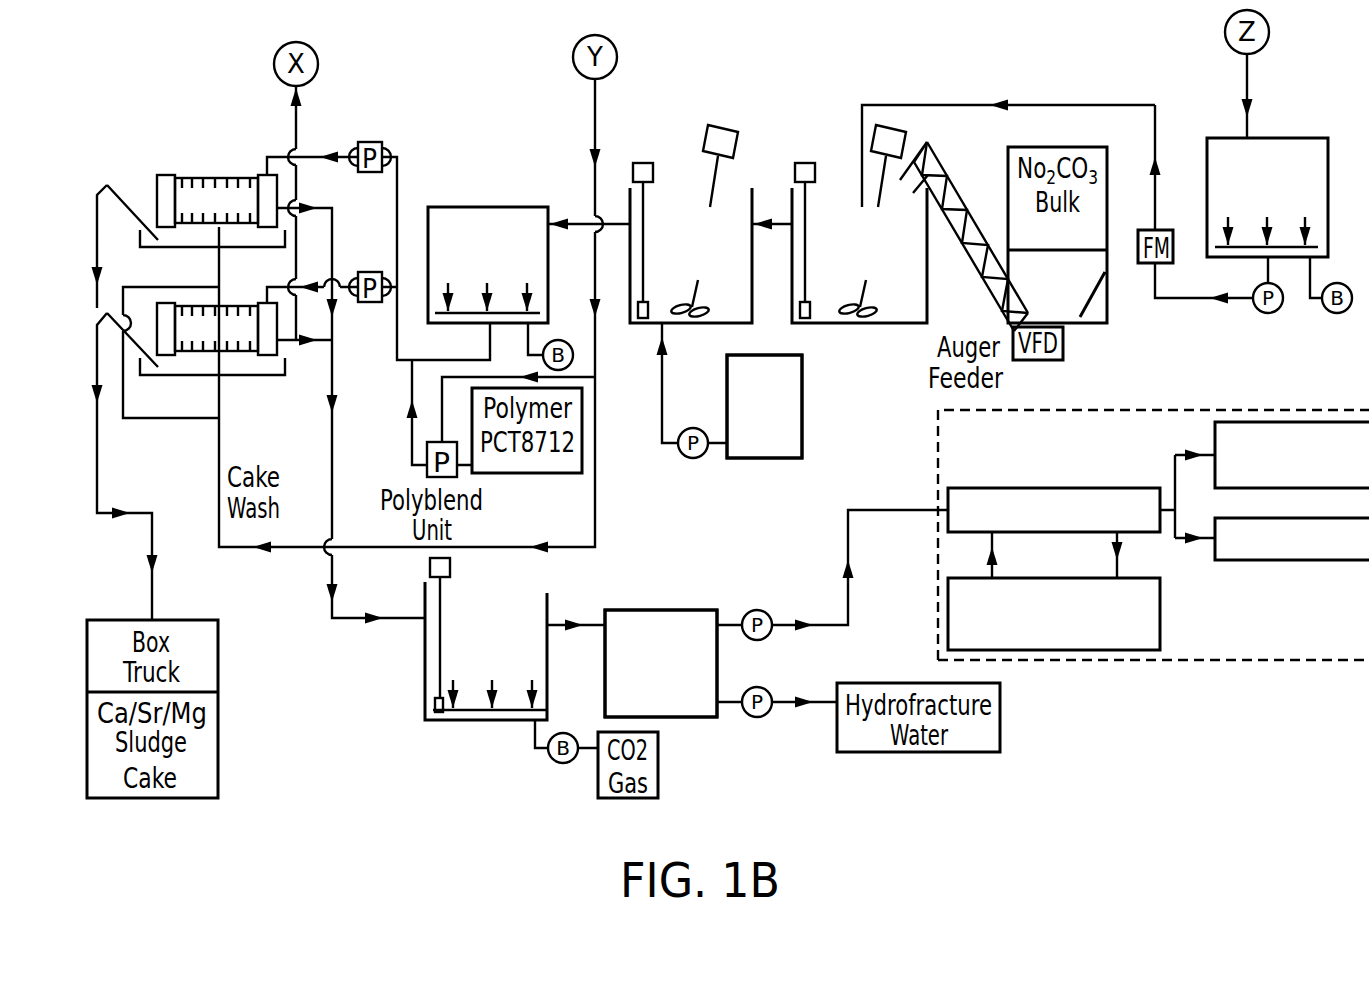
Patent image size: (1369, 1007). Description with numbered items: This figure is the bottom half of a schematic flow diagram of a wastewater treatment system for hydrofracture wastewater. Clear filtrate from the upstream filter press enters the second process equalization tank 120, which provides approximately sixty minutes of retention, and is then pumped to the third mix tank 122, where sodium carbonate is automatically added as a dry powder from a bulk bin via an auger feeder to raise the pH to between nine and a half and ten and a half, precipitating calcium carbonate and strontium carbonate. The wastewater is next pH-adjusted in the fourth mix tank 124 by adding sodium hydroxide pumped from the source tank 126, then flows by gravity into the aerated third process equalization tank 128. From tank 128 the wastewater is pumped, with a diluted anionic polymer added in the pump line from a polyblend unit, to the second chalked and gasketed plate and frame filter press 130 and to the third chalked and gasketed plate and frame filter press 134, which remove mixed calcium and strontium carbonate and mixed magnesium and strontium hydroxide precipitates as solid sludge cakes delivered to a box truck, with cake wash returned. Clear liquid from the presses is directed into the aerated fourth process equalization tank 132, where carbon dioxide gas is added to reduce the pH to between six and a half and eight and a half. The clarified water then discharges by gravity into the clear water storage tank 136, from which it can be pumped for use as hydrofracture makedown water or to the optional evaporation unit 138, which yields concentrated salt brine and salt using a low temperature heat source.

The second process equalization tank 120 is at (1288, 138).
The third mix tank 122 is at (883, 323).
The fourth mix tank 124 is at (748, 253).
The source tank 126 is at (755, 458).
The third process equalization tank 128 is at (508, 207).
The second chalked and gasketed plate and frame filter press 130 is at (190, 177).
The fourth process equalization tank 132 is at (547, 595).
The third chalked and gasketed plate and frame filter press 134 is at (277, 345).
The clear water storage tank 136 is at (673, 610).
The evaporation unit 138 is at (1118, 410).